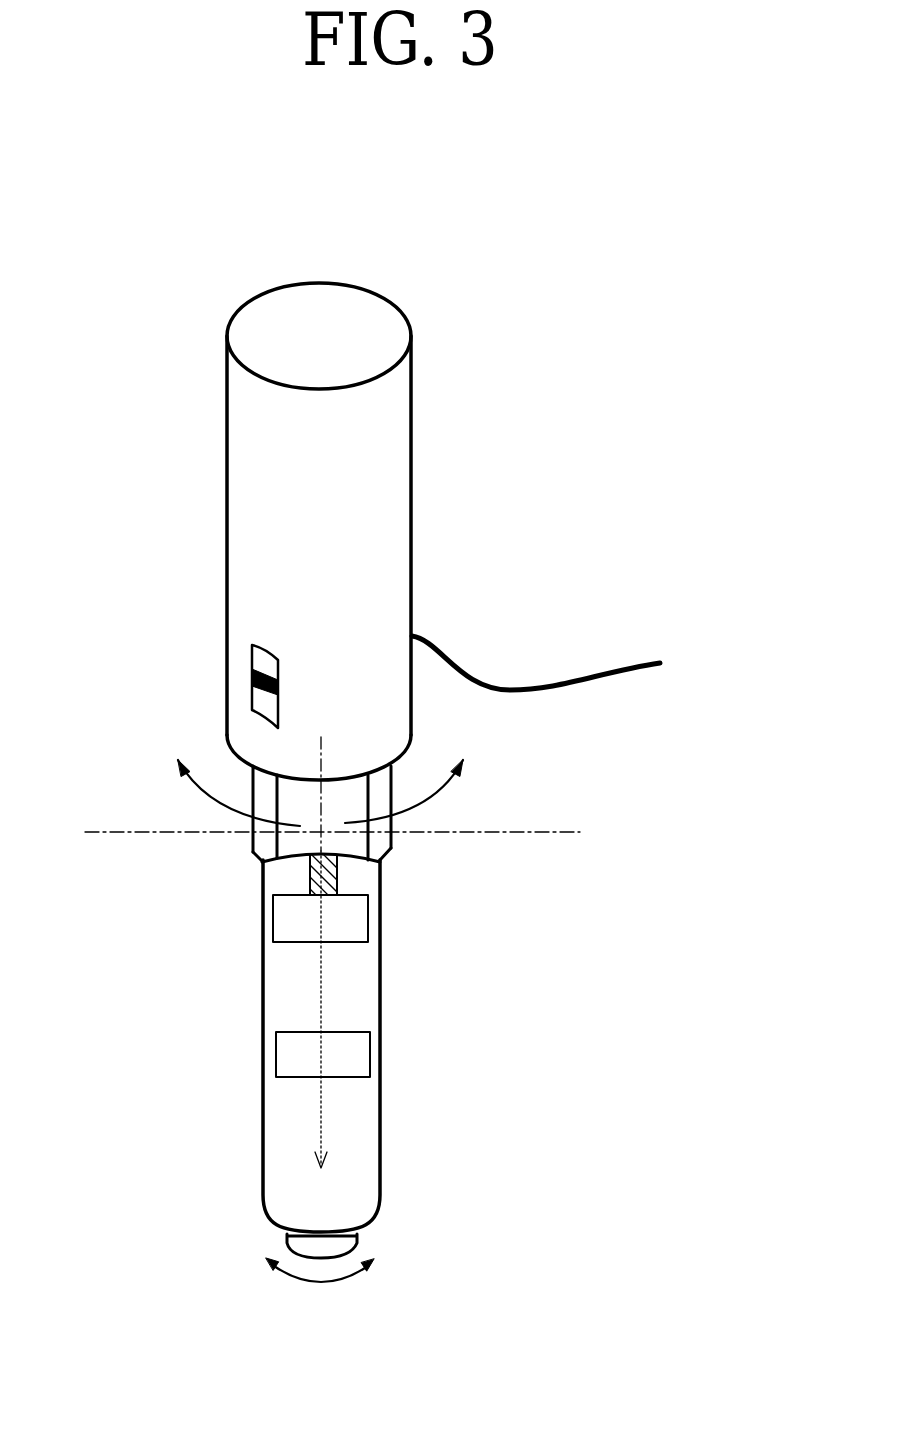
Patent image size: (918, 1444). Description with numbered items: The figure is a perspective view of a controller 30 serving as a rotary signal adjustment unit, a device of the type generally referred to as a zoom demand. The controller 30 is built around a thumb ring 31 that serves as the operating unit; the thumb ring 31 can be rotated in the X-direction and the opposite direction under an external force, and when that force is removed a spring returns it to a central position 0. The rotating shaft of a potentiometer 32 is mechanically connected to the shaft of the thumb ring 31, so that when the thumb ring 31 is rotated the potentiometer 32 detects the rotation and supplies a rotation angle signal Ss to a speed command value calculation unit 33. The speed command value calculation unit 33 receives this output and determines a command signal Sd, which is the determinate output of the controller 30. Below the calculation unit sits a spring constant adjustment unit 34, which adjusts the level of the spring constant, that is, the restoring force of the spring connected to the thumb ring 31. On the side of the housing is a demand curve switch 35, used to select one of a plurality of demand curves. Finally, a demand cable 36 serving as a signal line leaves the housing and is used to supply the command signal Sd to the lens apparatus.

The controller 30 is at (387, 268).
The central position 0 is at (322, 750).
The demand cable 36 is at (590, 680).
The demand curve switch 35 is at (250, 675).
The thumb ring 31 is at (380, 845).
The potentiometer 32 is at (273, 916).
The speed command value calculation unit 33 is at (276, 1056).
The spring constant adjustment unit 34 is at (313, 1250).
The rotation angle signal Ss is at (322, 978).
The command signal Sd is at (322, 1117).